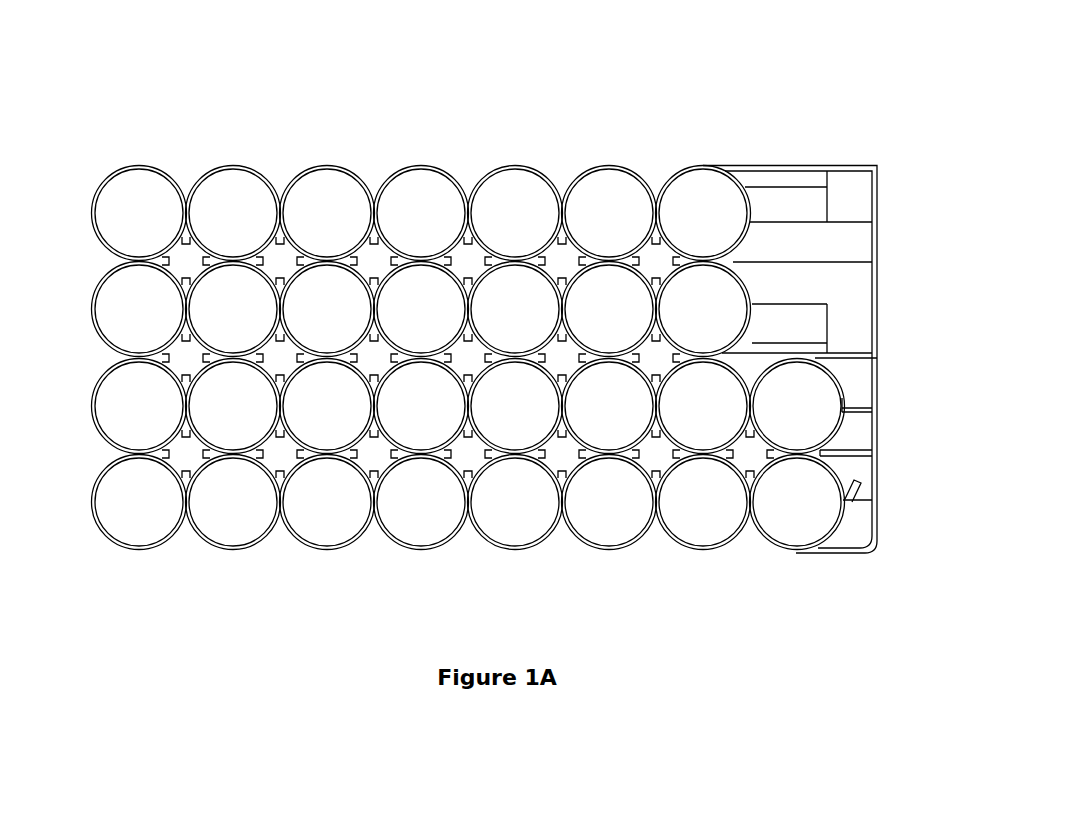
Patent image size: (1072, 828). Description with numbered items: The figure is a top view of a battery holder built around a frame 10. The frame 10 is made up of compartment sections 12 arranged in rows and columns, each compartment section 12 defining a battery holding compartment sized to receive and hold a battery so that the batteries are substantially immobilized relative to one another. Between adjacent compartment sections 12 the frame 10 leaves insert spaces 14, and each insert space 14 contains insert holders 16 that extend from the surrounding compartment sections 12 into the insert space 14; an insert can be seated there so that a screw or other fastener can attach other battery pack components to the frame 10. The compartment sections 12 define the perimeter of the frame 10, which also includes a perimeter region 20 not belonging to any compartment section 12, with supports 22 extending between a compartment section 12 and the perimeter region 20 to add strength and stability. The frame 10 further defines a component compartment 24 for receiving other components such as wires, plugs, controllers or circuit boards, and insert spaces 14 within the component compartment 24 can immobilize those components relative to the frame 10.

The frame 10 is at (187, 148).
The compartment sections 12 is at (98, 353).
The insert spaces 14 is at (185, 454).
The insert holders 16 is at (175, 259).
The perimeter regions 20 is at (723, 142).
The supports 22 is at (857, 405).
The component compartment 24 is at (962, 166).